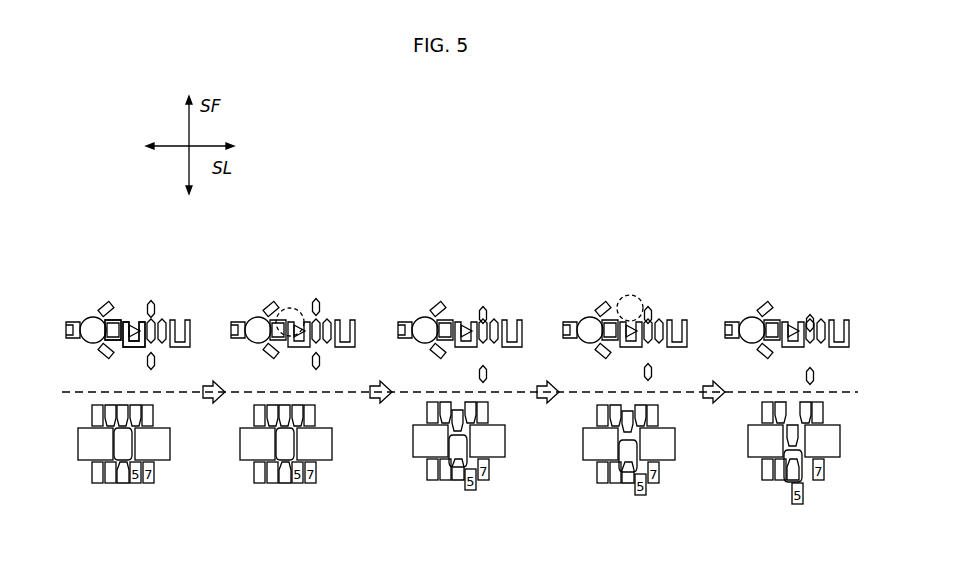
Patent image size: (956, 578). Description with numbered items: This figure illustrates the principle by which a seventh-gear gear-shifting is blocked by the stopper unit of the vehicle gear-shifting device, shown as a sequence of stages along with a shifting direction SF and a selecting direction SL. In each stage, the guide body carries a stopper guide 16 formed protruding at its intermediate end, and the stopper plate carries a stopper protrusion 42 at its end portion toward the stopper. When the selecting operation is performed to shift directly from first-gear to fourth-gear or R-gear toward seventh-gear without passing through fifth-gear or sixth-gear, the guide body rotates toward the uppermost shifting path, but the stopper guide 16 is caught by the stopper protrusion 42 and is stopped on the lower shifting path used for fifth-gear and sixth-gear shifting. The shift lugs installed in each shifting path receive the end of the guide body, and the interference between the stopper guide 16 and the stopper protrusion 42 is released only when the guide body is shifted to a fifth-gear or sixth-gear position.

The stopper guide 16 is at (137, 322).
The stopper protrusion 42 is at (117, 318).